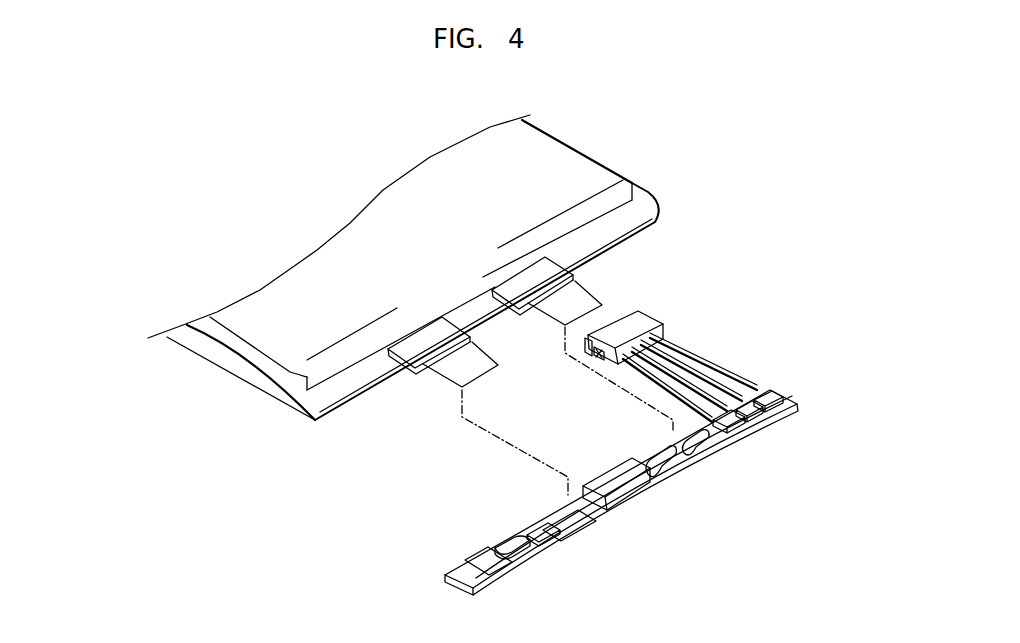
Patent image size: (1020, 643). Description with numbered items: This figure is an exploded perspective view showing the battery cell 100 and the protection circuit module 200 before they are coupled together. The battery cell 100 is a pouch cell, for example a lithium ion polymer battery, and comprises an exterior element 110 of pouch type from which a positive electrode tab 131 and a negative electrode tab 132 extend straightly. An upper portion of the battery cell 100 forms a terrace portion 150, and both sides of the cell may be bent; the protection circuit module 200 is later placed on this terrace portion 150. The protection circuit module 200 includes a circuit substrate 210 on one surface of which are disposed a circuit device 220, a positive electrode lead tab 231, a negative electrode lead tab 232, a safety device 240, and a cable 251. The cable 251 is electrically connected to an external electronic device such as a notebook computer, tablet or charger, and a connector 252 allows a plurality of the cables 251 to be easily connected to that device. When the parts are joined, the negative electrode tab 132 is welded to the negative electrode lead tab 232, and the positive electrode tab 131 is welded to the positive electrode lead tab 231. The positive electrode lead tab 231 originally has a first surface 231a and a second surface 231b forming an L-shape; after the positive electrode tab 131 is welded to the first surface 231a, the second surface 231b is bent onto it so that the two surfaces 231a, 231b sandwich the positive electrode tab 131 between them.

The battery cell 100 is at (212, 361).
The exterior element 110 is at (562, 163).
The terrace portion 150 is at (623, 233).
The positive electrode tab 131 is at (586, 303).
The negative electrode tab 132 is at (438, 371).
The protection circuit module 200 is at (443, 579).
The circuit substrate 210 is at (798, 397).
The circuit device 220 is at (617, 487).
The positive electrode lead tab 231 is at (796, 481).
The first surface 231a is at (687, 467).
The second surface 231b is at (714, 457).
The negative electrode lead tab 232 is at (563, 523).
The safety device 240 is at (530, 543).
The cable 251 is at (733, 371).
The connector 252 is at (645, 323).